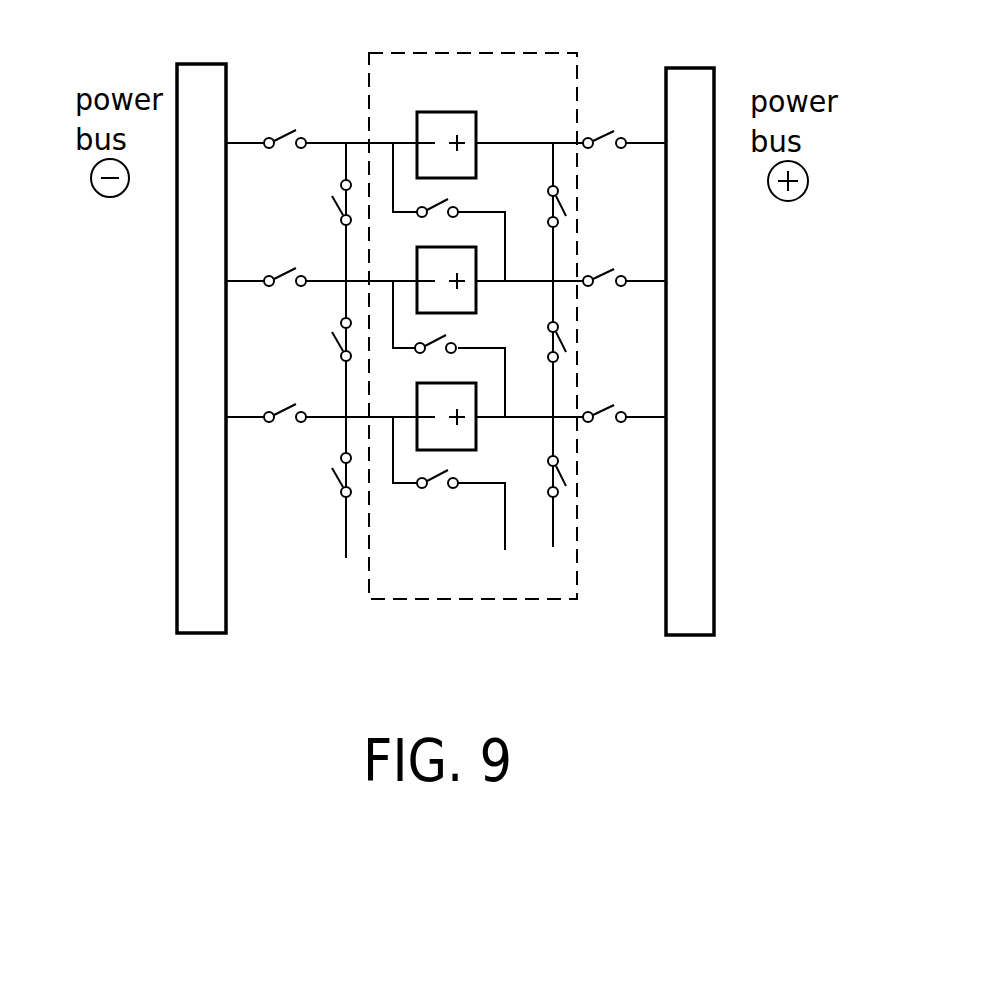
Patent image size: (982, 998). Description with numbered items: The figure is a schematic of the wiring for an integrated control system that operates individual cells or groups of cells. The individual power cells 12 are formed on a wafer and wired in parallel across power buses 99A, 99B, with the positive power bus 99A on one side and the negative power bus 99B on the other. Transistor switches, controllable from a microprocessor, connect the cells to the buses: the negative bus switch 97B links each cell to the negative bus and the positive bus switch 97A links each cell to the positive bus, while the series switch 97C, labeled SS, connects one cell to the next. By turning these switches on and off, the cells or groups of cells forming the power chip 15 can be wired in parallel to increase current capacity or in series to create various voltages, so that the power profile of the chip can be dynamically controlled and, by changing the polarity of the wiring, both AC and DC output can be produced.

The power cell 12 is at (478, 303).
The power chip 15 is at (525, 600).
The positive bus switch 97A is at (611, 116).
The negative bus switch 97B is at (298, 108).
The series switch 97C is at (438, 506).
The power bus 99A is at (702, 541).
The power bus 99B is at (195, 541).
The series switch SS is at (450, 212).